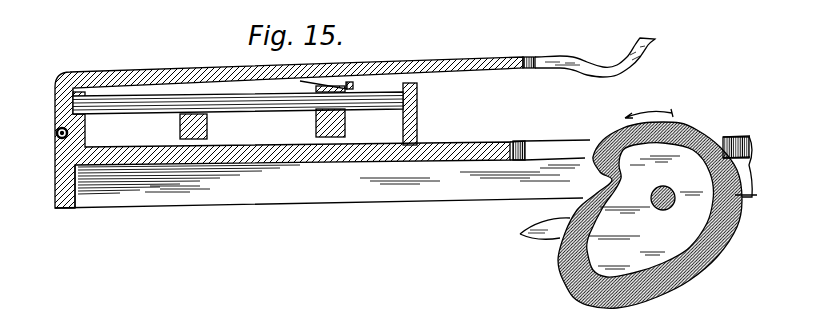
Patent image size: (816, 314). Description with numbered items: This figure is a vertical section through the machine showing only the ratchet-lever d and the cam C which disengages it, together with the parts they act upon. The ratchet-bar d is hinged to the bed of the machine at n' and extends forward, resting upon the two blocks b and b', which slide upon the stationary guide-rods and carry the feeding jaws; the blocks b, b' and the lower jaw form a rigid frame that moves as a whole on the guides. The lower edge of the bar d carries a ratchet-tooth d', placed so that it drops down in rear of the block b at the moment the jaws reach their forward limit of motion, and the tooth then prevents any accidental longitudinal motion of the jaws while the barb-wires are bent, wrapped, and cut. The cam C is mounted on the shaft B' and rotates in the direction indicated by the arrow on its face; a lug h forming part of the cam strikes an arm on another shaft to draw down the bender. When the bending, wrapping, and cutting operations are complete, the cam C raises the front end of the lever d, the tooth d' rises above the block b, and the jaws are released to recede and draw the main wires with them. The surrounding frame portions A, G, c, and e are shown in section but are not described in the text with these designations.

The bed or base A is at (406, 172).
The shaft B' is at (668, 190).
The cam C is at (650, 208).
The bar G is at (238, 117).
The block b is at (338, 111).
The block b' is at (202, 126).
The chamber c is at (289, 132).
The ratchet-bar d is at (551, 57).
The ratchet-tooth d' is at (334, 87).
The wall e is at (416, 114).
The lug h is at (520, 233).
The hinge n' is at (52, 133).